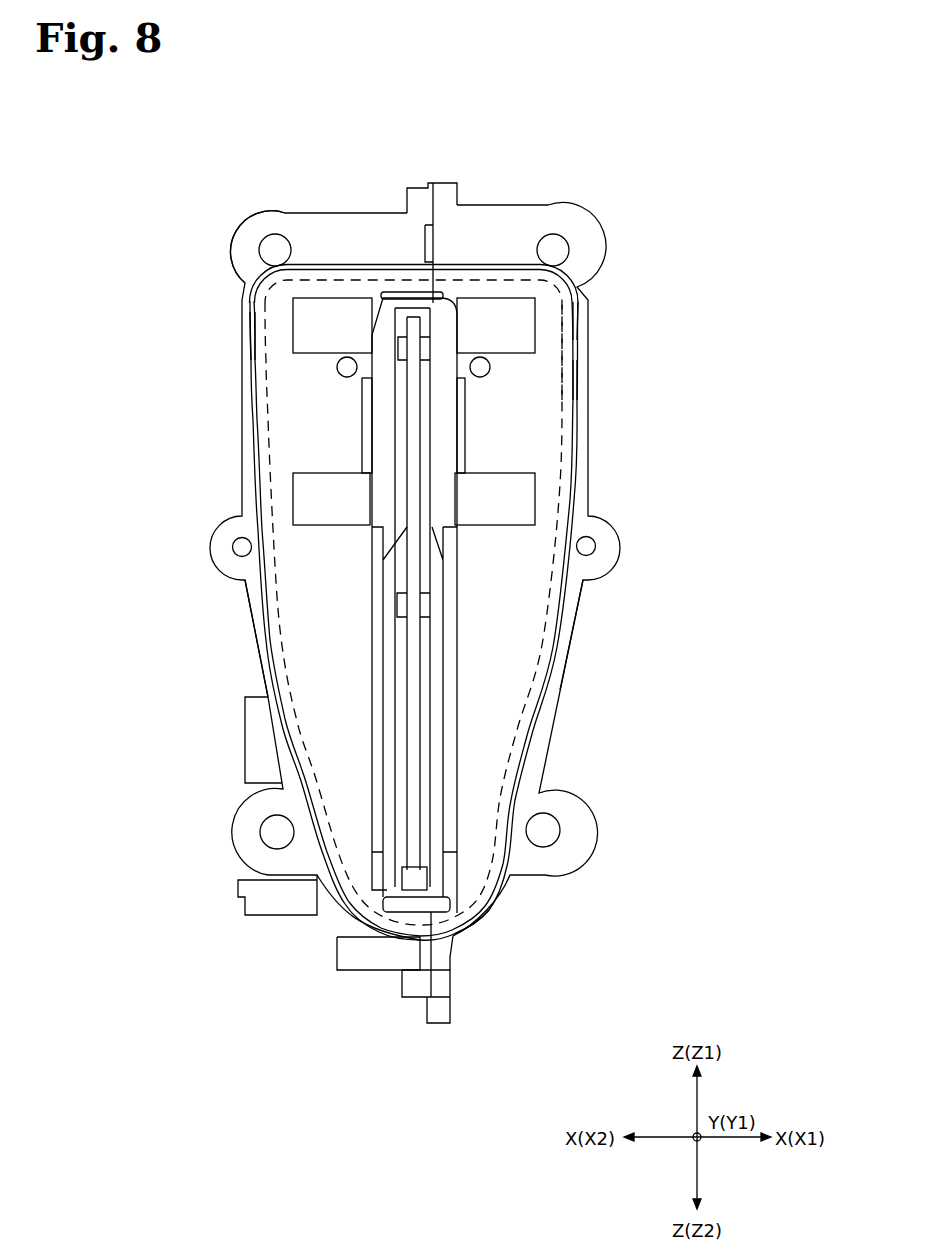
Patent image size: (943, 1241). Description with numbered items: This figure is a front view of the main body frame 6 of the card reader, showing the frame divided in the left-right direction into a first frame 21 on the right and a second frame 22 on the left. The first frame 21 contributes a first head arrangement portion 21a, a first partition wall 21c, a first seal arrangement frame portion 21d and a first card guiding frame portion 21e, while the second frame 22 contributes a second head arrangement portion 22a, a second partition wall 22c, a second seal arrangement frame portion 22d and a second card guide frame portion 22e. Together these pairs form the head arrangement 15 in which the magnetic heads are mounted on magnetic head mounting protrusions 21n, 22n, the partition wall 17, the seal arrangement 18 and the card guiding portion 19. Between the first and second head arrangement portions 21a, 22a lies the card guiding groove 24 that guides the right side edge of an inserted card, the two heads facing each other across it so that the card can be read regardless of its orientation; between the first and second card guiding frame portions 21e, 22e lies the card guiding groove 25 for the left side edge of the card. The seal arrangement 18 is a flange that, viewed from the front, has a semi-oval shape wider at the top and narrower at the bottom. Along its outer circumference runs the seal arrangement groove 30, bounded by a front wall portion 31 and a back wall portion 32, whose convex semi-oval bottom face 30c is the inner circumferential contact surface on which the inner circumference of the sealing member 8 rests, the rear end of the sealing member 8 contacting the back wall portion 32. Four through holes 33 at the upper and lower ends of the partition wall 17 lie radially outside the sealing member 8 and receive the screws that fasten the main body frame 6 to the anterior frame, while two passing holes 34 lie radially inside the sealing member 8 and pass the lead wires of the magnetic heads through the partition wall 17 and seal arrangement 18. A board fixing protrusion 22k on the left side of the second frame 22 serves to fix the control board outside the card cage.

The main body frame 6 is at (633, 156).
The sealing member 8 is at (580, 382).
The head arrangement 15 is at (347, 416).
The partition wall 17 is at (240, 228).
The seal arrangement 18 is at (578, 318).
The card guiding portion 19 is at (469, 833).
The first frame 21 is at (594, 641).
The first head arrangement portion 21a is at (462, 453).
The first partition wall 21c is at (562, 695).
The first seal arrangement frame portion 21d is at (634, 320).
The first card guiding frame portion 21e is at (432, 882).
The magnetic head mounting protrusion 21n is at (488, 298).
The second frame 22 is at (210, 638).
The second head arrangement portion 22a is at (366, 455).
The second partition wall 22c is at (256, 650).
The second seal arrangement frame portion 22d is at (252, 340).
The second card guide frame portion 22e is at (372, 858).
The board fixing protrusion 22k is at (246, 750).
The magnetic head mounting protrusion 22n is at (335, 303).
The card guiding groove 24 is at (412, 408).
The card guiding groove 25 is at (412, 876).
The seal arrangement groove 30 is at (575, 458).
The bottom face 30c is at (631, 383).
The front wall portion 31 is at (560, 645).
The back wall portion 32 is at (570, 608).
The through hole 33 is at (266, 249).
The passing hole 34 is at (342, 371).